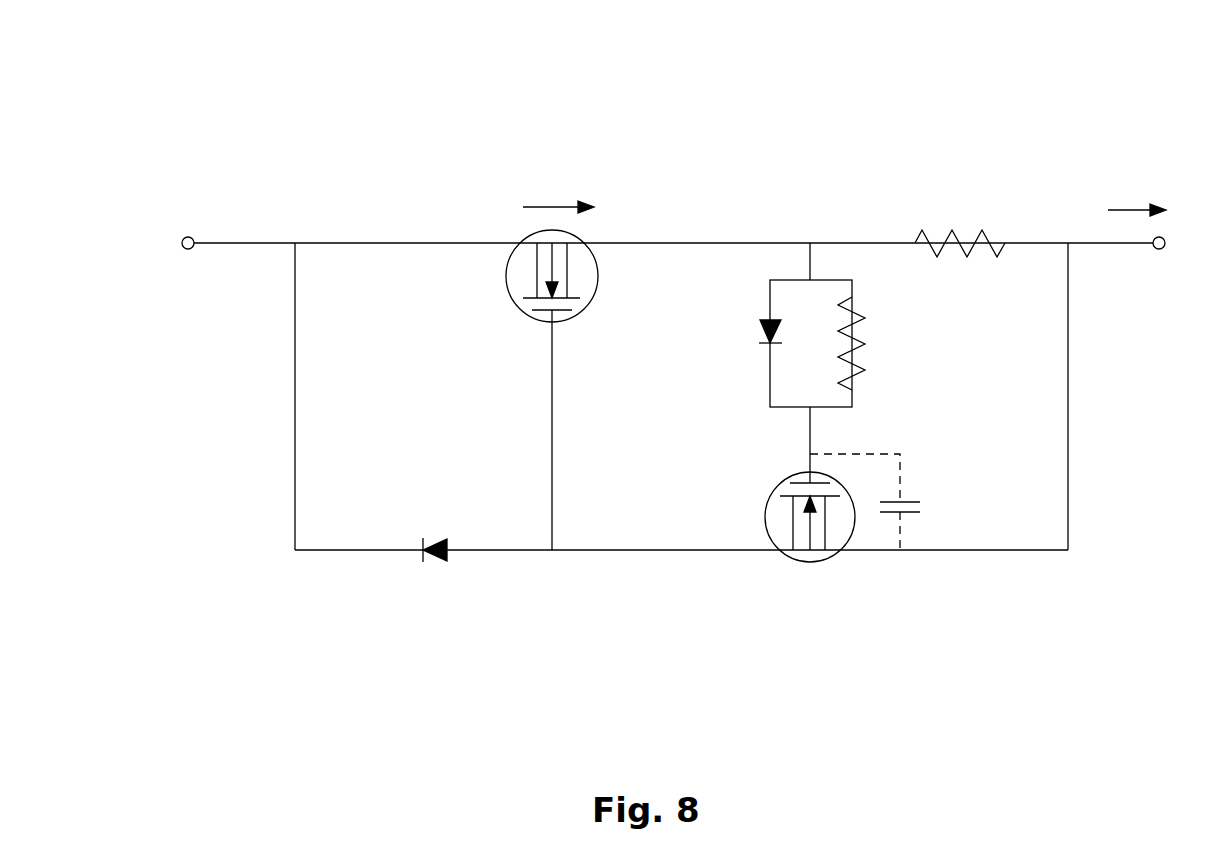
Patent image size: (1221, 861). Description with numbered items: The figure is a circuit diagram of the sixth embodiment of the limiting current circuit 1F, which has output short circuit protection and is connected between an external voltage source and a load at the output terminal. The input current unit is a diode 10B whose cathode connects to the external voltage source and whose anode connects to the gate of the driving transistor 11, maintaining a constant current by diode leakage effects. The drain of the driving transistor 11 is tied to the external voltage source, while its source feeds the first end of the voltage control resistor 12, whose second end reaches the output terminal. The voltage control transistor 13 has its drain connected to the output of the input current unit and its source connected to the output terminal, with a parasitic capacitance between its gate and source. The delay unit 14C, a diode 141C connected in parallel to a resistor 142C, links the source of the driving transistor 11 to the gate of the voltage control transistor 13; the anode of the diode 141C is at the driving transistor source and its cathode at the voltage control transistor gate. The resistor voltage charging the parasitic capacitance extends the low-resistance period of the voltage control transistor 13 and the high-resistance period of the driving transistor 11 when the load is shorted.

The limiting current circuit 1F is at (168, 176).
The driving transistor 11 is at (552, 230).
The voltage control resistor 12 is at (990, 240).
The voltage control transistor 13 is at (808, 562).
The diode 10B is at (447, 560).
The delay unit 14C is at (762, 254).
The diode 141C is at (770, 318).
The resistor 142C is at (855, 298).